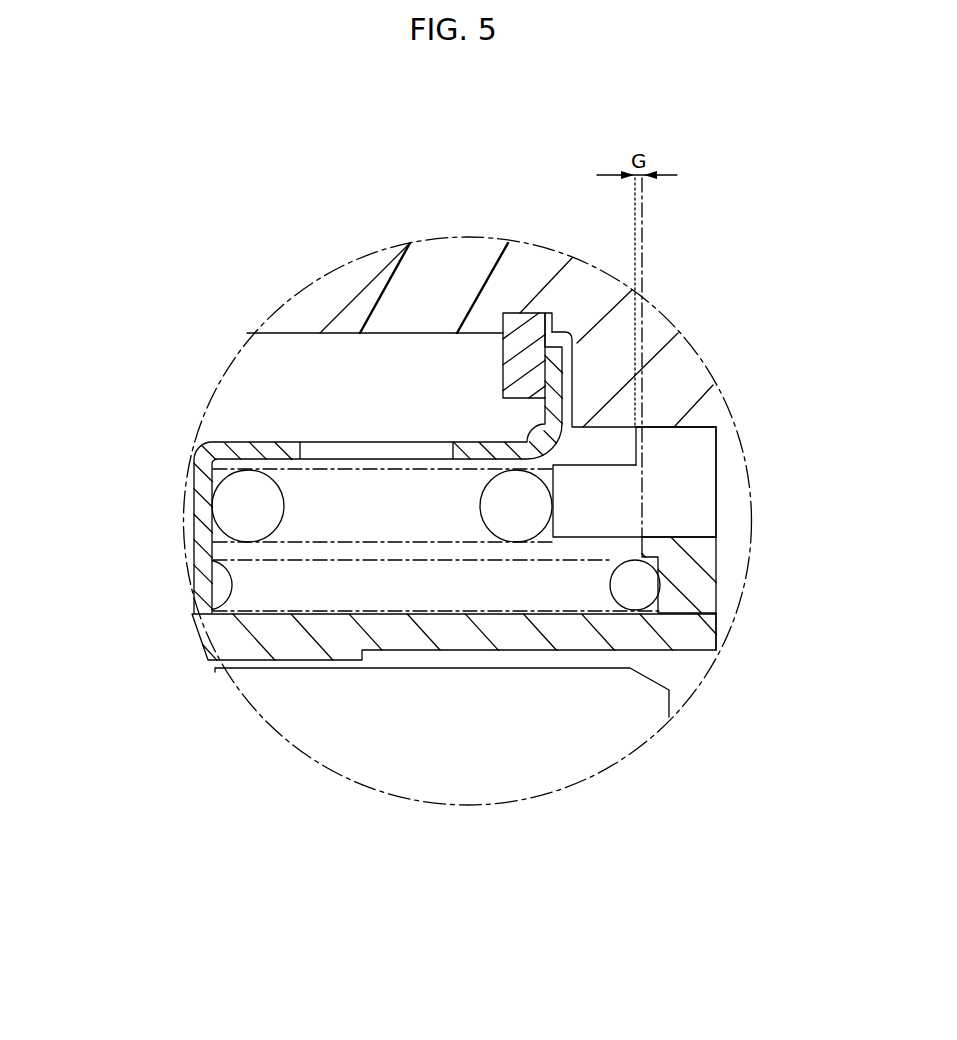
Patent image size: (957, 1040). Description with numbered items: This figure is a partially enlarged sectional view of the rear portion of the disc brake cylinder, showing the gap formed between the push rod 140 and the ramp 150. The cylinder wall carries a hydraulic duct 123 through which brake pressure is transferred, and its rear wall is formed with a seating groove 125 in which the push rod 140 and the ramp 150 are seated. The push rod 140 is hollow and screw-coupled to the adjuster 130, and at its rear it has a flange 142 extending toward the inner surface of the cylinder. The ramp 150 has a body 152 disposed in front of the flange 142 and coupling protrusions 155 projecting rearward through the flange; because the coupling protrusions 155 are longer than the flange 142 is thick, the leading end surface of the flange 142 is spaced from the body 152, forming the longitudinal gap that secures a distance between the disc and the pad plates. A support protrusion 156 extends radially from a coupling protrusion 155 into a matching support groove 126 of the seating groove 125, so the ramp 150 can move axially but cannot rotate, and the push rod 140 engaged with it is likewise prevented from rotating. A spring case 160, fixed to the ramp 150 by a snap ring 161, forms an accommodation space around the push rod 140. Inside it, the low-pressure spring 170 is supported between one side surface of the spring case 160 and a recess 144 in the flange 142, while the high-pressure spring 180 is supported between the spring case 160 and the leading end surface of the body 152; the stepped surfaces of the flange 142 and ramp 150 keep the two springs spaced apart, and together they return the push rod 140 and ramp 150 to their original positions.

The hydraulic duct 123 is at (456, 254).
The seating groove 125 is at (714, 635).
The support groove 126 is at (607, 436).
The adjuster 130 is at (270, 710).
The push rod 140 is at (217, 637).
The flange 142 is at (710, 570).
The recess 144 is at (662, 606).
The ramp 150 is at (731, 443).
The body 152 is at (595, 513).
The coupling protrusions 155 is at (695, 502).
The support protrusion 156 is at (712, 427).
The spring case 160 is at (233, 443).
The snap ring 161 is at (522, 323).
The low-pressure spring 170 is at (223, 582).
The high-pressure spring 180 is at (242, 506).